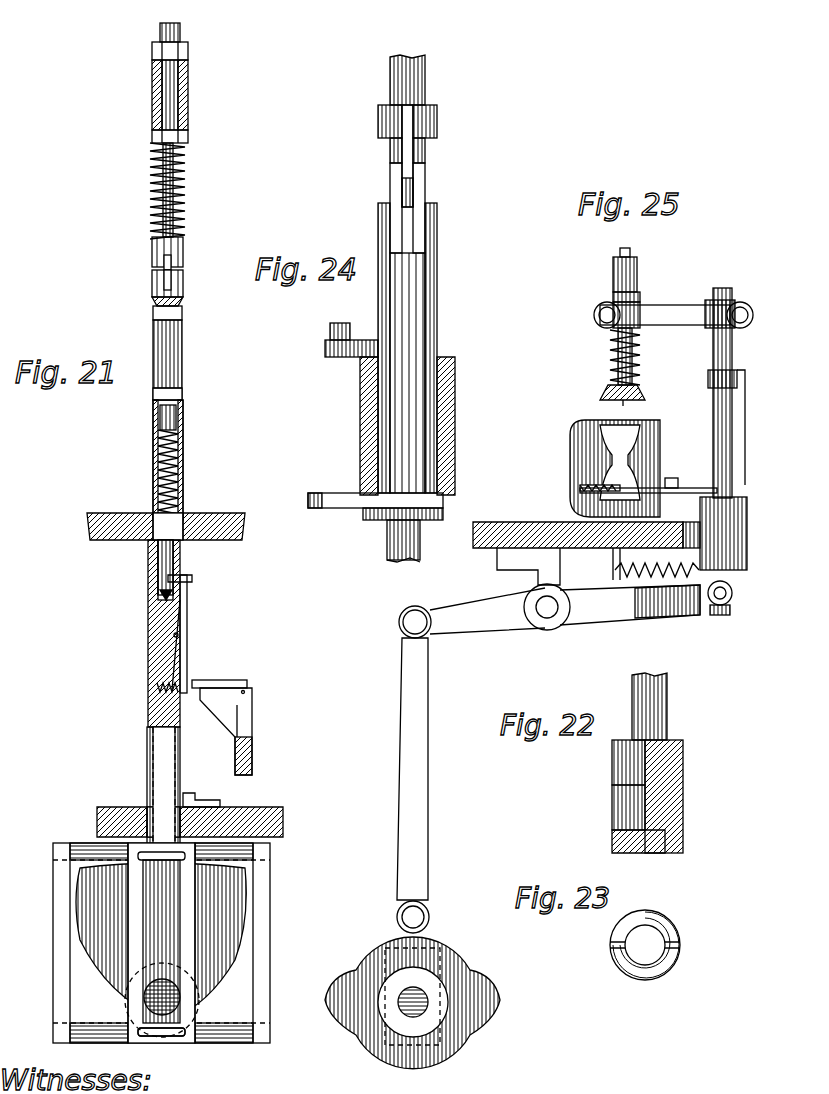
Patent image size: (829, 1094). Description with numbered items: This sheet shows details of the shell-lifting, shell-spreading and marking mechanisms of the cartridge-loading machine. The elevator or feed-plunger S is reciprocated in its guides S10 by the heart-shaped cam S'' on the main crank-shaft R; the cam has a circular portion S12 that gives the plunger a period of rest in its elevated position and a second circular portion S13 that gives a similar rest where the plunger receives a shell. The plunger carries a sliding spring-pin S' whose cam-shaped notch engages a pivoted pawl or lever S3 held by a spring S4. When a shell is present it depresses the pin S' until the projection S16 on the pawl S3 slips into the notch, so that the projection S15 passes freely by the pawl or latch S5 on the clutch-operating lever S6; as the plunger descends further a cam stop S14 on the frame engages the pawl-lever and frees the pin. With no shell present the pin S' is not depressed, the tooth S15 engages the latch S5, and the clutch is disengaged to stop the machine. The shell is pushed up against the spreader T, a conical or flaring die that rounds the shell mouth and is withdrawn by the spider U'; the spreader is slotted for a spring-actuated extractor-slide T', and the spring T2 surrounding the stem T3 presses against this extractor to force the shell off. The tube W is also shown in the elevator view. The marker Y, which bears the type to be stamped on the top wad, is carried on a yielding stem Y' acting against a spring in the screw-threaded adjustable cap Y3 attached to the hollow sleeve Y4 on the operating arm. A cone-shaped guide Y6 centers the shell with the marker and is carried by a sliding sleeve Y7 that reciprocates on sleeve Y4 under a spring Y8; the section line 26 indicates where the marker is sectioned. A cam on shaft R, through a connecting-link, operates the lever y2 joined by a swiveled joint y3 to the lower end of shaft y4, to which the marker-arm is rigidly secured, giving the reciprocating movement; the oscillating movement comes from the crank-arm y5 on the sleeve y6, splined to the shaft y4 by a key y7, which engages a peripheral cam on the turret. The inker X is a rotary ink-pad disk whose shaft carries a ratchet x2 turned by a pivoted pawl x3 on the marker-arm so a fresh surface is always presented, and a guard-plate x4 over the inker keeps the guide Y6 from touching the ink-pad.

In FIG. 21, the spider U' is at (191, 95).
In FIG. 21, the stem T3 is at (178, 103).
In FIG. 22, the stem T3 is at (667, 708).
In FIG. 21, the spring T2 is at (185, 165).
In FIG. 21, the extractor-slide T' is at (190, 250).
In FIG. 22, the extractor-slide T' is at (646, 808).
In FIG. 23, the extractor-slide T' is at (643, 945).
In FIG. 21, the spreader T is at (185, 288).
In FIG. 22, the spreader T is at (611, 815).
In FIG. 23, the spreader T is at (645, 945).
In FIG. 21, the tube W is at (182, 355).
In FIG. 21, the feed-plunger S is at (180, 460).
In FIG. 21, the sliding pin S' is at (144, 502).
In FIG. 21, the pivoted pawl S3 is at (185, 598).
In FIG. 21, the spring S4 is at (157, 688).
In FIG. 21, the pawl S5 is at (222, 688).
In FIG. 21, the clutch-operating lever S6 is at (252, 745).
In FIG. 21, the guides S10 is at (183, 530).
In FIG. 21, the circular portion S12 is at (240, 880).
In FIG. 21, the circular portion S13 is at (160, 1032).
In FIG. 21, the cam stop S14 is at (195, 797).
In FIG. 21, the projection S15 is at (190, 582).
In FIG. 21, the projection S16 is at (185, 578).
In FIG. 21, the heart-shaped cam S'' is at (161, 941).
In FIG. 21, the main crank-shaft R is at (150, 998).
In FIG. 25, the main crank-shaft R is at (400, 1005).
In FIG. 24, the shaft y4 is at (425, 88).
In FIG. 25, the shaft y4 is at (732, 357).
In FIG. 24, the crank-arm y5 is at (325, 348).
In FIG. 25, the crank-arm y5 is at (680, 488).
In FIG. 24, the sleeve y6 is at (407, 348).
In FIG. 25, the sleeve y6 is at (735, 470).
In FIG. 24, the key y7 is at (413, 165).
In FIG. 25, the key y7 is at (745, 392).
In FIG. 25, the section line 26 is at (623, 248).
In FIG. 25, the adjustable cap Y3 is at (637, 272).
In FIG. 25, the hollow sleeve Y4 is at (640, 297).
In FIG. 25, the cone-shaped guide Y6 is at (645, 395).
In FIG. 25, the sliding sleeve Y7 is at (640, 372).
In FIG. 25, the spring Y8 is at (640, 350).
In FIG. 25, the inker X is at (660, 430).
In FIG. 25, the ratchet x2 is at (625, 488).
In FIG. 25, the pivoted pawl x3 is at (660, 493).
In FIG. 25, the guard-plate x4 is at (640, 420).
In FIG. 25, the lever y2 is at (505, 620).
In FIG. 25, the swiveled joint y3 is at (732, 595).
In FIG. 25, the yielding stem Y' is at (414, 769).
In FIG. 25, the marker Y is at (413, 1003).